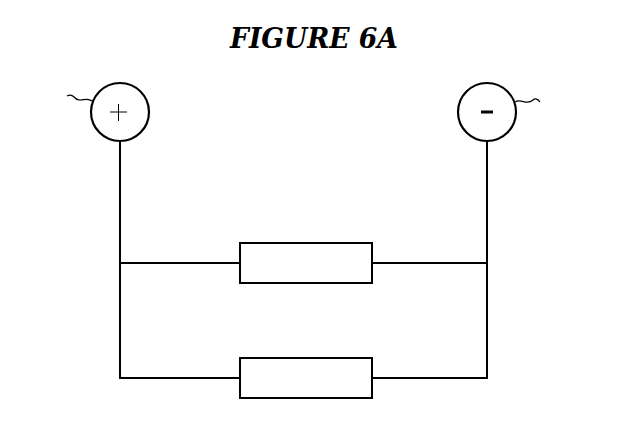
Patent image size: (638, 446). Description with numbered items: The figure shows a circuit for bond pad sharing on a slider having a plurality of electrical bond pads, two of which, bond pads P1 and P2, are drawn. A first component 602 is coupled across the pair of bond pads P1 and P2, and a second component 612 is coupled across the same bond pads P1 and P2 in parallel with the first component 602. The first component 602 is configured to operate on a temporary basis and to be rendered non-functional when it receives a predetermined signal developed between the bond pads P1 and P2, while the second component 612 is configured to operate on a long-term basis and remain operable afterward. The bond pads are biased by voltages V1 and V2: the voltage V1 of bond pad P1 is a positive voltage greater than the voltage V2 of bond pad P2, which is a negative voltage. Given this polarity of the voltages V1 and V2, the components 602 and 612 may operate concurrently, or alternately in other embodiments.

The first component 602 is at (327, 243).
The second component 612 is at (314, 358).
The voltage of bond pad P1 V1 is at (120, 94).
The voltage of bond pad P2 V2 is at (487, 94).
The electrical bond pad P1 is at (69, 99).
The electrical bond pad P2 is at (538, 102).